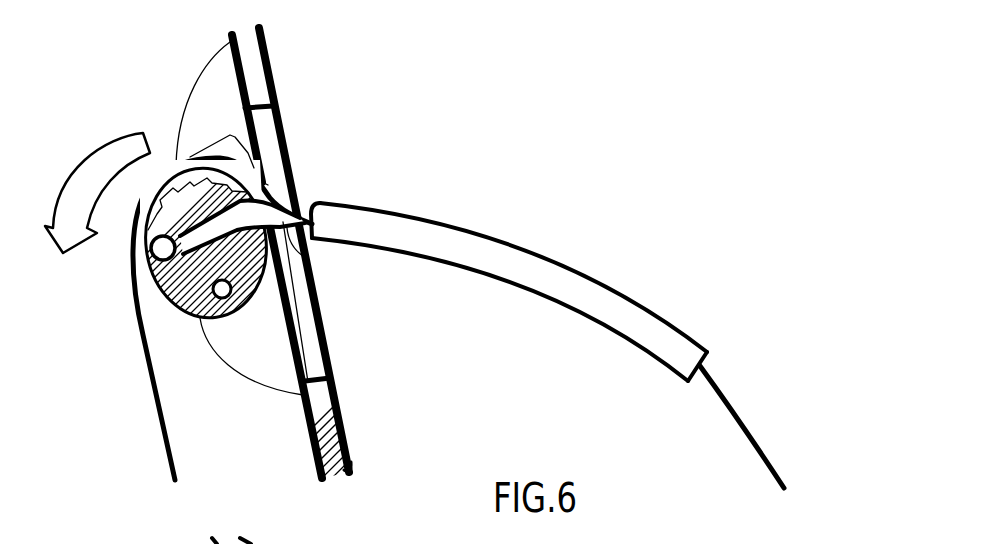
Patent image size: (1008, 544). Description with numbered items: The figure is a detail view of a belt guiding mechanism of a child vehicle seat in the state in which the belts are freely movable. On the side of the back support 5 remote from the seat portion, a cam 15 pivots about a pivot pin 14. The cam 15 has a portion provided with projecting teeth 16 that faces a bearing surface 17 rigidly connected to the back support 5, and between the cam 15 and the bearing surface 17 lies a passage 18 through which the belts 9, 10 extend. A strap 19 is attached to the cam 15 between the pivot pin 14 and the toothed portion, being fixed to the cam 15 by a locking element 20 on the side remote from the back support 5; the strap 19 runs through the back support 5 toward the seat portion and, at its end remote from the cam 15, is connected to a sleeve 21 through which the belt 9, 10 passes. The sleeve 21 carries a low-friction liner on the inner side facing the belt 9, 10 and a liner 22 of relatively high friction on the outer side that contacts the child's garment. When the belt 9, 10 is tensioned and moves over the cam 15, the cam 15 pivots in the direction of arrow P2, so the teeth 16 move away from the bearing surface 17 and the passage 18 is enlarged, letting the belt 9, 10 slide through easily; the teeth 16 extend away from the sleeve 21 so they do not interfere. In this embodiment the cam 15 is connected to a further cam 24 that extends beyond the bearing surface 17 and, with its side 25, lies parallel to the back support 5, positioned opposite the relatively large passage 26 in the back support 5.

The back support 5 is at (259, 52).
The belt 9 is at (720, 427).
The belt 10 is at (737, 414).
The pivot pin 14 is at (224, 293).
The cam 15 is at (177, 285).
The teeth 16 is at (267, 187).
The bearing surface 17 is at (192, 153).
The passage 18 is at (183, 165).
The strap 19 is at (306, 258).
The locking element 20 is at (165, 252).
The sleeve 21 is at (450, 240).
The liner 22 is at (482, 275).
The cam 24 is at (233, 147).
The side 25 is at (253, 158).
The passage 26 is at (267, 143).
The arrow P2 is at (87, 190).